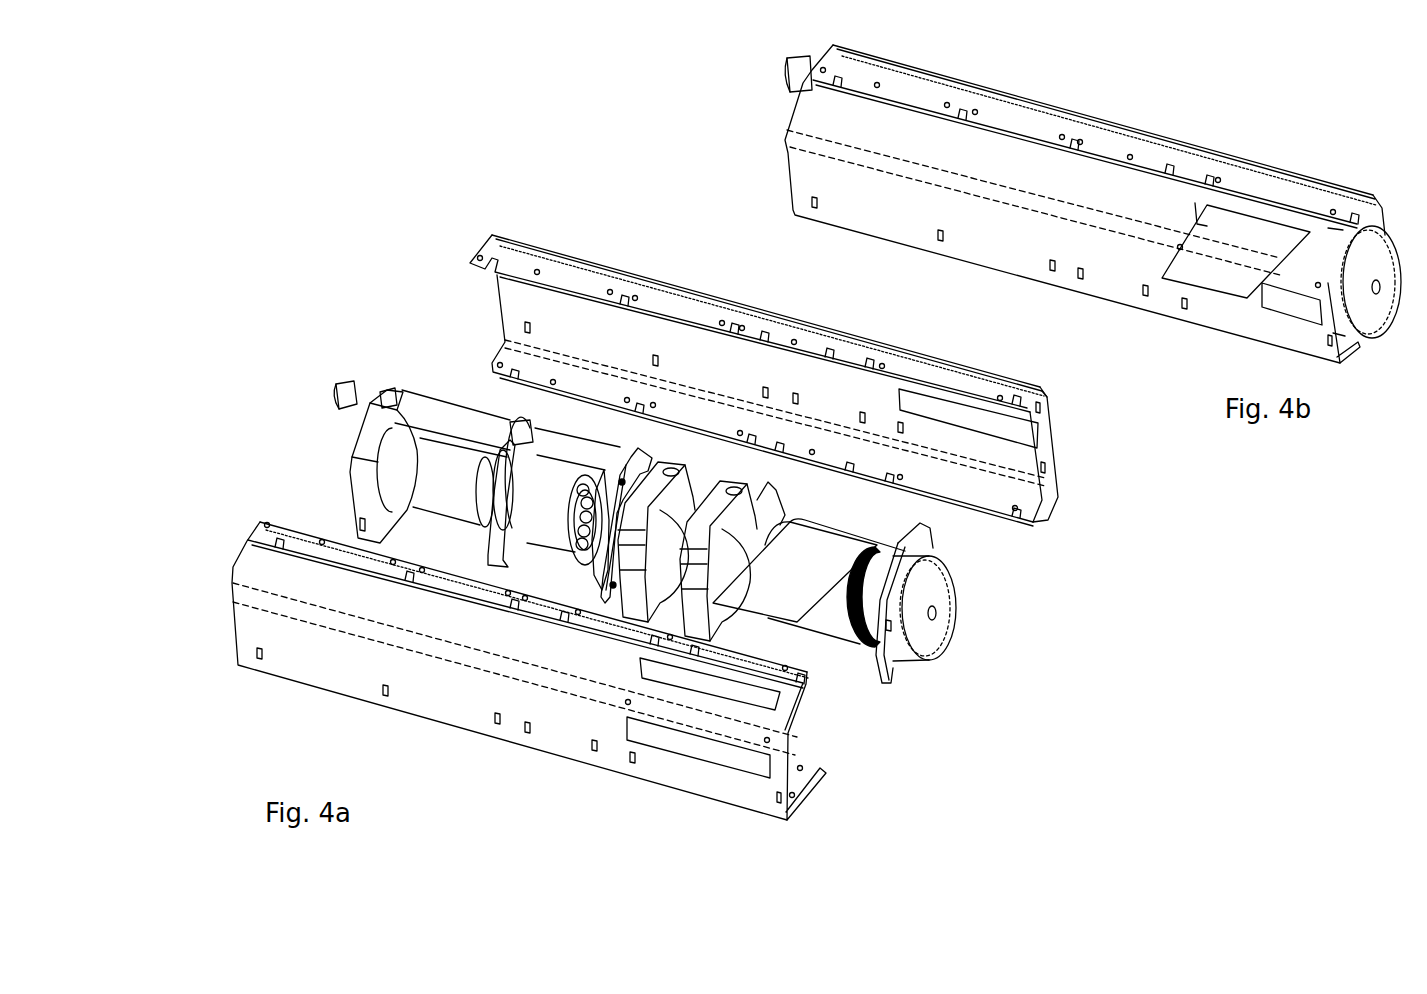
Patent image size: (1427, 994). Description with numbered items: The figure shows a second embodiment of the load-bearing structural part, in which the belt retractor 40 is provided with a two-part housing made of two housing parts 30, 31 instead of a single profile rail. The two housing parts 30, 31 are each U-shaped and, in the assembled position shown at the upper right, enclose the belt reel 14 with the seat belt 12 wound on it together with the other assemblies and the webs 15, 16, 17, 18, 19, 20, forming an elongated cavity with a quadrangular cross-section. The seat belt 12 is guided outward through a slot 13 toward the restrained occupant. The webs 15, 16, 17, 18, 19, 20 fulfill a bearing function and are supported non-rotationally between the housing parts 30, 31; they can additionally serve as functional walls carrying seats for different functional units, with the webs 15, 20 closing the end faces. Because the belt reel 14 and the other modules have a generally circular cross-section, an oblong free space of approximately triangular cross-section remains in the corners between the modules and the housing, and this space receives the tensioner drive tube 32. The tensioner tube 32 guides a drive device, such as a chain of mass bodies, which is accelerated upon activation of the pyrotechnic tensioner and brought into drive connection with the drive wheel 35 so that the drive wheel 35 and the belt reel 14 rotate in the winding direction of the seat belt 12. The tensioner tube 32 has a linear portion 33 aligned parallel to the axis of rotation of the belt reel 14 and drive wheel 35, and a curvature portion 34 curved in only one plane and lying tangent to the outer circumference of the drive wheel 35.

The seat belt 12 is at (845, 549).
The slot 13 is at (767, 700).
The belt reel 14 is at (870, 590).
The web 15 is at (920, 530).
The web 16 is at (745, 492).
The web 17 is at (680, 475).
The web 18 is at (640, 472).
The web 19 is at (527, 430).
The web 20 is at (360, 493).
The housing part 30 is at (655, 290).
The housing part 31 is at (253, 617).
The tensioner drive tube 32 is at (455, 410).
The linear portion 33 is at (487, 425).
The curvature portion 34 is at (605, 470).
The drive wheel 35 is at (580, 545).
The belt retractor 40 is at (323, 446).